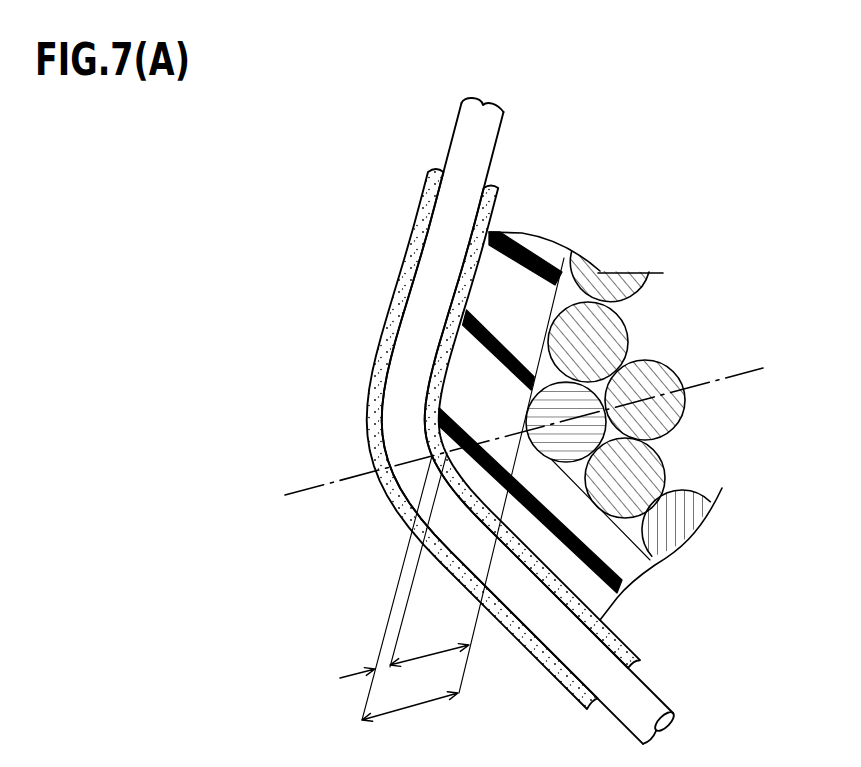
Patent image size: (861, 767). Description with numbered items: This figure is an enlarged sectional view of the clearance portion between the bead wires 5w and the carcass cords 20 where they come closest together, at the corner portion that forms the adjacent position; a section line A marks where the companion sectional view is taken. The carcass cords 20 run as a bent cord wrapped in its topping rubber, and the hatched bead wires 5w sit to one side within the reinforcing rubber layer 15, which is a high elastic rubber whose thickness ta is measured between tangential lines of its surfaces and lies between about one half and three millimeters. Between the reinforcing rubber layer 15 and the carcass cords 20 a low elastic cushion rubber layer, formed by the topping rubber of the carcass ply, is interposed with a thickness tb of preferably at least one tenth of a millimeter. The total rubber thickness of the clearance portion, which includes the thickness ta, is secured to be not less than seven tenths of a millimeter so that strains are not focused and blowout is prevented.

The carcass cords 20 is at (462, 147).
The reinforcing rubber layer 15 is at (550, 243).
The bead wires 5w is at (598, 337).
The section line A- A is at (523, 433).
The thickness of the cushion rubber layer tb is at (378, 673).
The thickness of the reinforcing rubber layer ta is at (433, 655).